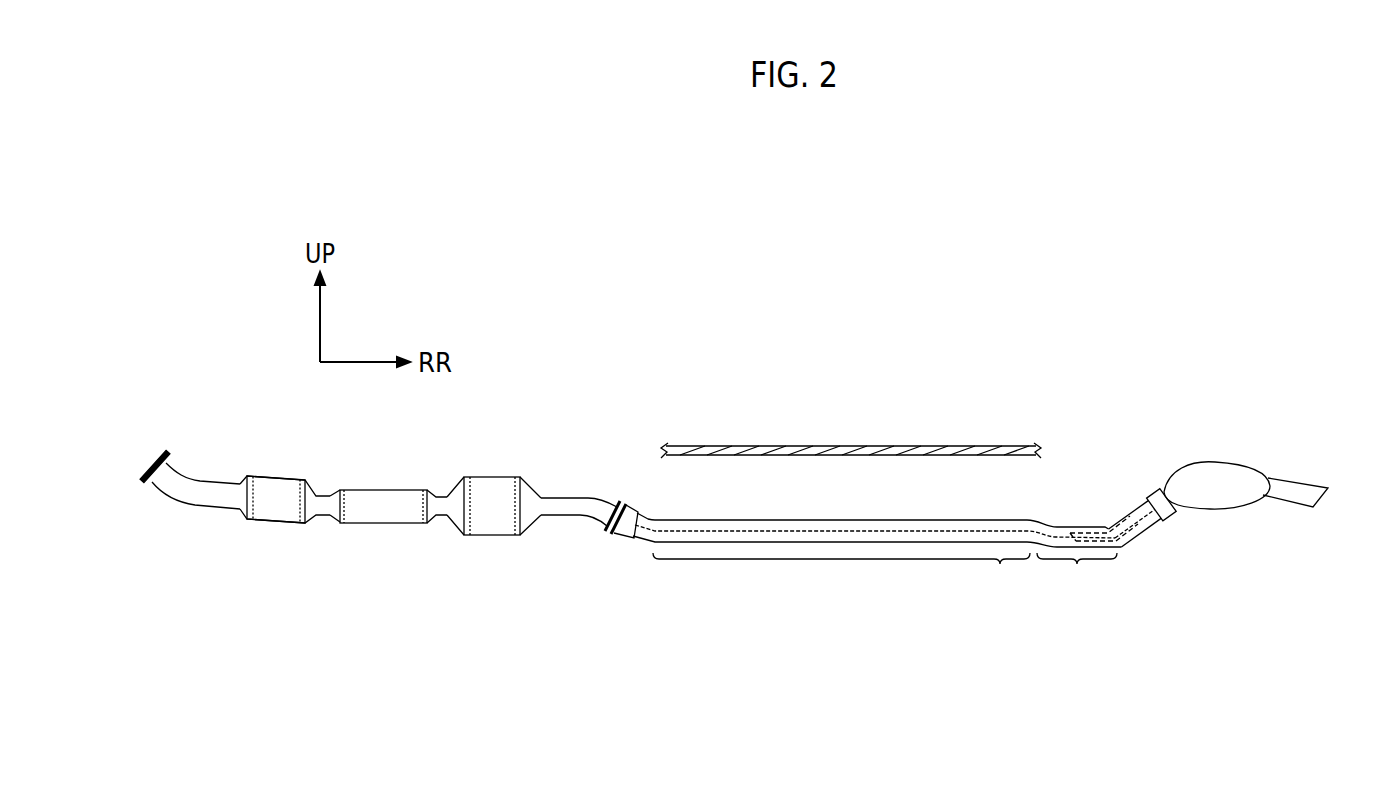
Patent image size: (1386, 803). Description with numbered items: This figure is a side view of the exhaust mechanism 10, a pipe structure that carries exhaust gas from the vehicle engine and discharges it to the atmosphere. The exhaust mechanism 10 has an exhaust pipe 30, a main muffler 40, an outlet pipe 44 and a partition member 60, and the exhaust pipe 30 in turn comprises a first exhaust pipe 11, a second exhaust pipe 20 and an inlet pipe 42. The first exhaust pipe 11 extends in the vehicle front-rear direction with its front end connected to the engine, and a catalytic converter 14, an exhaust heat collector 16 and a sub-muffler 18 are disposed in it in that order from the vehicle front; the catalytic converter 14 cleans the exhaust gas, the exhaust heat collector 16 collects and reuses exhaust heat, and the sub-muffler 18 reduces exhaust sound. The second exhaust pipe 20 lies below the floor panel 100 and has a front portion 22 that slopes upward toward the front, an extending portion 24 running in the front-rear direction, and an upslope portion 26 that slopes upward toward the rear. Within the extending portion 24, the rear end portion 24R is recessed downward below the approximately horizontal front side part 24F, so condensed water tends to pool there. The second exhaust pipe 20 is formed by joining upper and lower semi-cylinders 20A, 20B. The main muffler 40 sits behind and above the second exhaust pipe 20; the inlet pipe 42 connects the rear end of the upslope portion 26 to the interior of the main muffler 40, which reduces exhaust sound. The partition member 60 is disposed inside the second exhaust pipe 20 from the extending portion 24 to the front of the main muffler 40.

The exhaust mechanism 10 is at (1180, 326).
The first exhaust pipe 11 is at (557, 521).
The catalytic converter 14 is at (275, 527).
The exhaust heat collector 16 is at (378, 526).
The sub-muffler 18 is at (493, 536).
The second exhaust pipe 20 is at (731, 519).
The semi-cylinder 20A is at (835, 528).
The semi-cylinder 20B is at (918, 539).
The front portion 22 is at (613, 538).
The extending portion 24 is at (1103, 593).
The front side part 24F is at (841, 575).
The rear end portion 24R is at (1077, 575).
The upslope portion 26 is at (1147, 532).
The exhaust pipe 30 is at (211, 468).
The main muffler 40 is at (1228, 462).
The inlet pipe 42 is at (1158, 496).
The outlet pipe 44 is at (1298, 486).
The partition member 60 is at (1096, 535).
The floor panel 100 is at (966, 445).